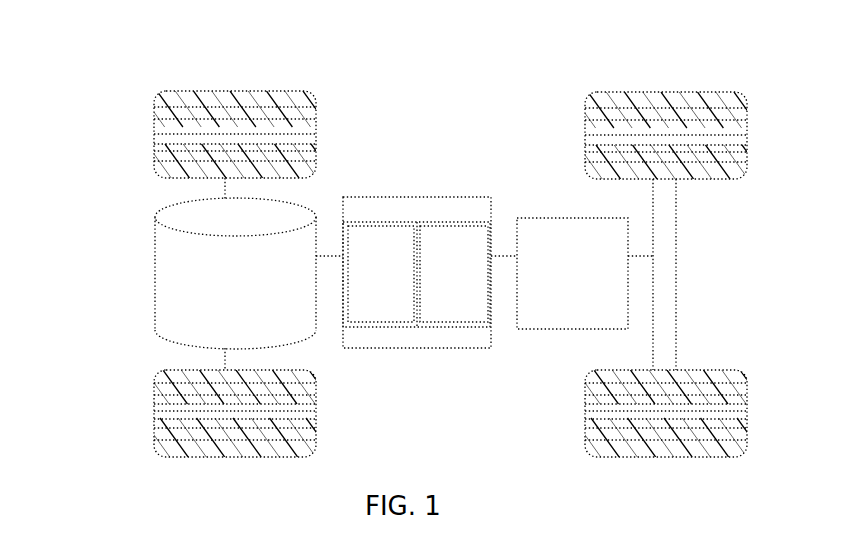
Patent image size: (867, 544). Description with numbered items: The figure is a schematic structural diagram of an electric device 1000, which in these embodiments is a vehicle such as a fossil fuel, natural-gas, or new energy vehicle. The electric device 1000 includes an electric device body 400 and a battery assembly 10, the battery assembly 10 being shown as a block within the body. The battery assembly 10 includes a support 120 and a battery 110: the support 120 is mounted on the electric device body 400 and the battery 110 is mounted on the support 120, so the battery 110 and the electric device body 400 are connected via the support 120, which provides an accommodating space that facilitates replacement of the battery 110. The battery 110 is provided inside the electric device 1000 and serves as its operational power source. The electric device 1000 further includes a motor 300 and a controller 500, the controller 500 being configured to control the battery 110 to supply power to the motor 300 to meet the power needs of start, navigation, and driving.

The electric device 1000 is at (486, 52).
The motor 300 is at (165, 283).
The electric device body 400 is at (411, 196).
The battery assembly 10 is at (429, 340).
The battery 110 is at (392, 308).
The support 120 is at (453, 222).
The controller 500 is at (563, 233).